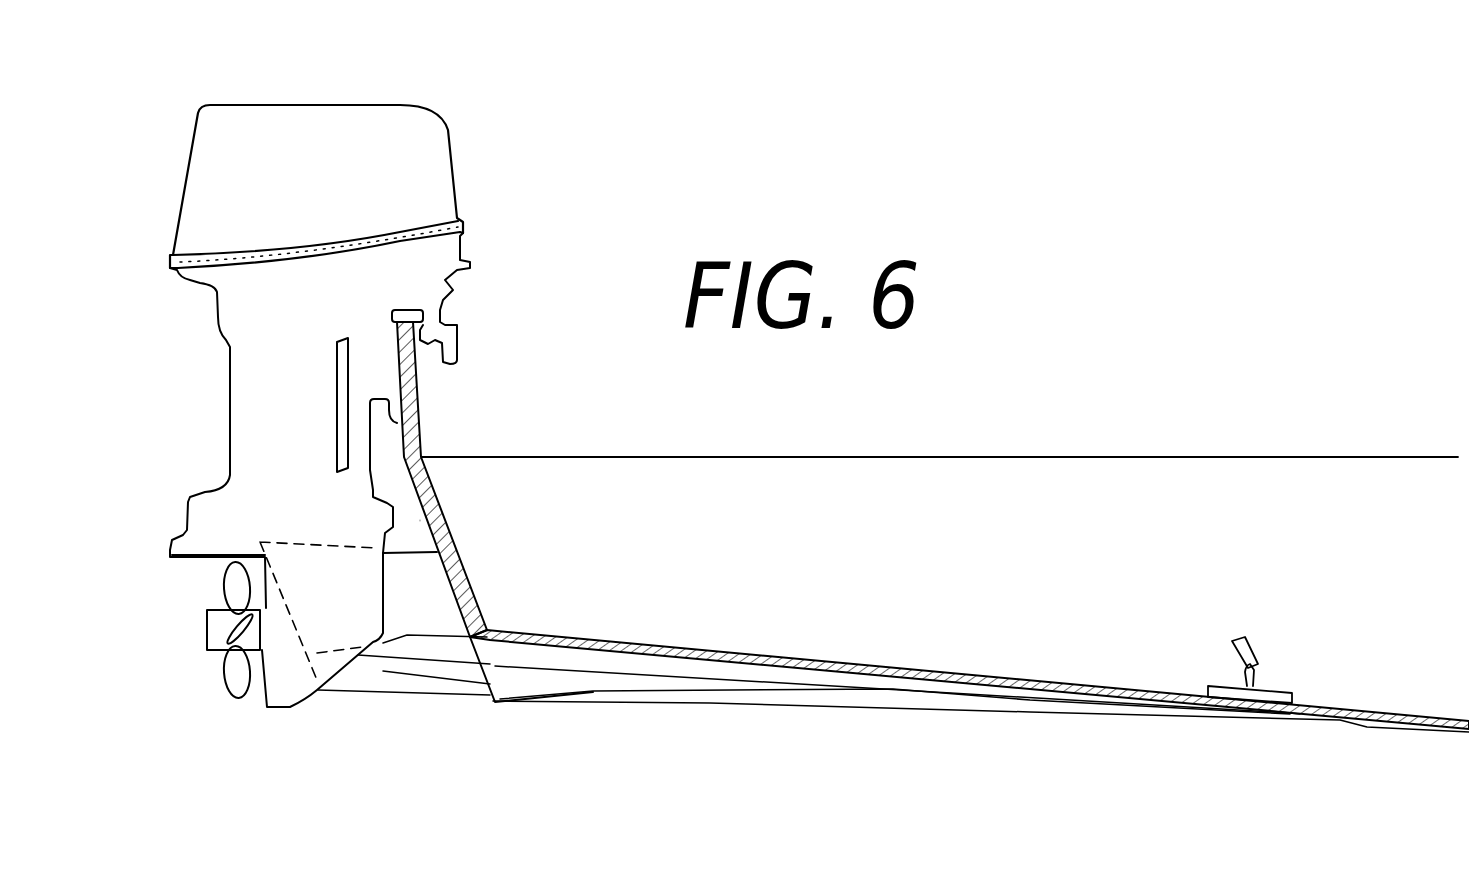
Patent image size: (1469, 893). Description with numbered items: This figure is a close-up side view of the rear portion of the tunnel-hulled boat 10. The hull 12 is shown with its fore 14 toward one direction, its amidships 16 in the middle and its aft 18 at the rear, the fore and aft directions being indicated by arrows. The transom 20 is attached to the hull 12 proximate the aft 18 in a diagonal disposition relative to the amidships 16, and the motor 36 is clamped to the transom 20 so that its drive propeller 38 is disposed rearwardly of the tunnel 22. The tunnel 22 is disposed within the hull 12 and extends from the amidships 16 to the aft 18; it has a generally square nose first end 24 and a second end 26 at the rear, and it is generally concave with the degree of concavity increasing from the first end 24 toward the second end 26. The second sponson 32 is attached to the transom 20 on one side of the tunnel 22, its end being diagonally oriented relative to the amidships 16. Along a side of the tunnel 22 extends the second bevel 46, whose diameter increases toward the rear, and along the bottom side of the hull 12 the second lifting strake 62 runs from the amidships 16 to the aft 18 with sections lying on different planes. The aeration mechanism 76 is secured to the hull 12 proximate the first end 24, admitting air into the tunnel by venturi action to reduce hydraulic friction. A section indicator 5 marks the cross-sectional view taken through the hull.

The section line 5- 5 is at (580, 270).
The tunnel-hulled boat 10 is at (1127, 387).
The hull 12 is at (1093, 686).
The fore 14 is at (1436, 410).
The amidships 16 is at (1170, 442).
The aft 18 is at (836, 411).
The transom 20 is at (420, 427).
The tunnel 22 is at (913, 680).
The first end 24 is at (1285, 717).
The second end 26 is at (547, 650).
The second sponson 32 is at (420, 595).
The motor 36 is at (377, 140).
The drive propeller 38 is at (232, 683).
The second bevel 46 is at (797, 683).
The second lifting strake 62 is at (1003, 705).
The aeration mechanism 76 is at (1273, 630).